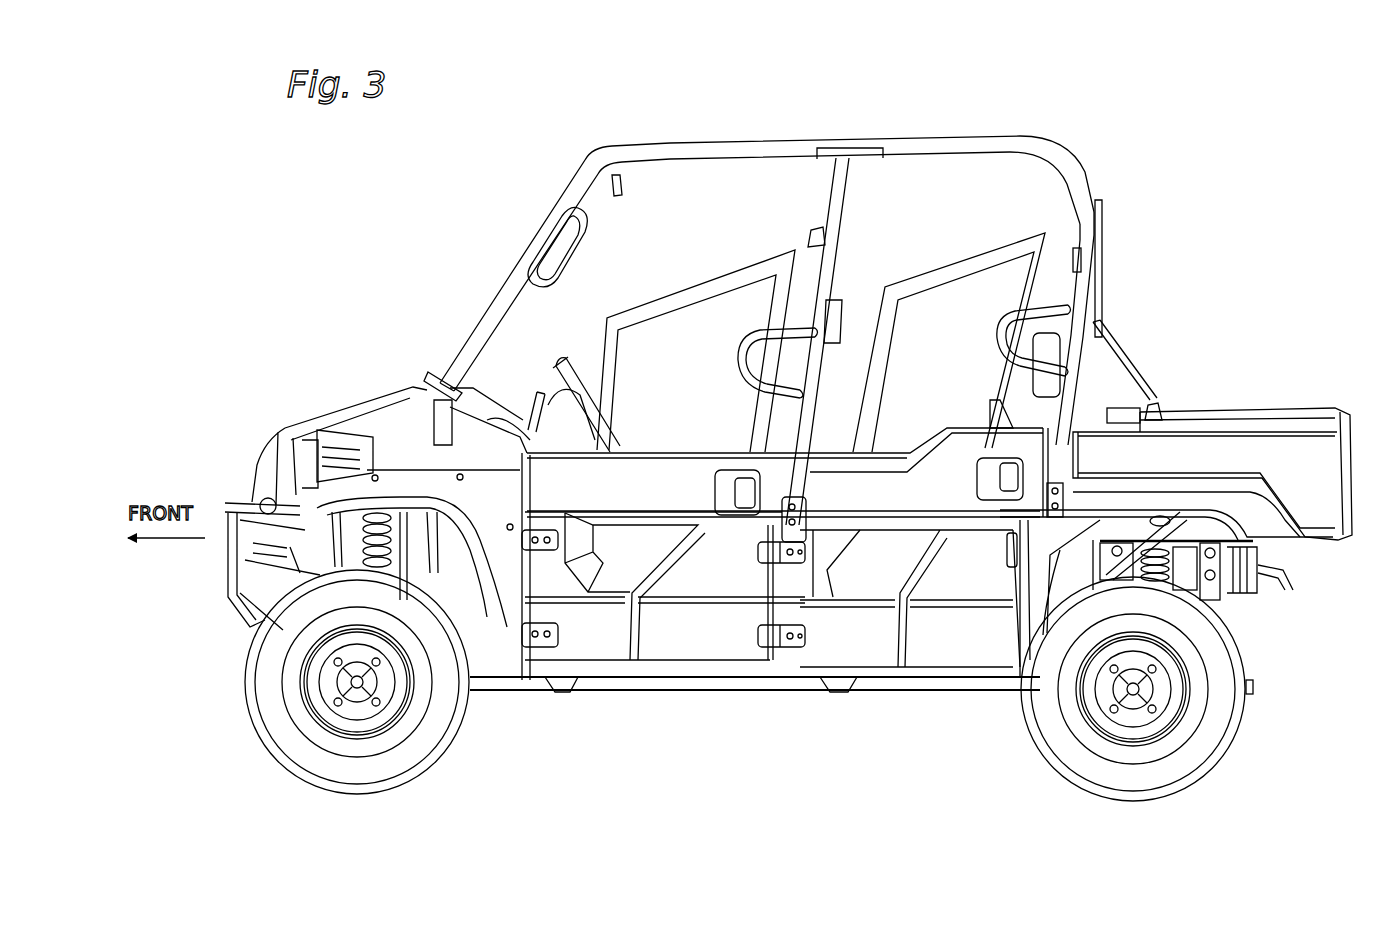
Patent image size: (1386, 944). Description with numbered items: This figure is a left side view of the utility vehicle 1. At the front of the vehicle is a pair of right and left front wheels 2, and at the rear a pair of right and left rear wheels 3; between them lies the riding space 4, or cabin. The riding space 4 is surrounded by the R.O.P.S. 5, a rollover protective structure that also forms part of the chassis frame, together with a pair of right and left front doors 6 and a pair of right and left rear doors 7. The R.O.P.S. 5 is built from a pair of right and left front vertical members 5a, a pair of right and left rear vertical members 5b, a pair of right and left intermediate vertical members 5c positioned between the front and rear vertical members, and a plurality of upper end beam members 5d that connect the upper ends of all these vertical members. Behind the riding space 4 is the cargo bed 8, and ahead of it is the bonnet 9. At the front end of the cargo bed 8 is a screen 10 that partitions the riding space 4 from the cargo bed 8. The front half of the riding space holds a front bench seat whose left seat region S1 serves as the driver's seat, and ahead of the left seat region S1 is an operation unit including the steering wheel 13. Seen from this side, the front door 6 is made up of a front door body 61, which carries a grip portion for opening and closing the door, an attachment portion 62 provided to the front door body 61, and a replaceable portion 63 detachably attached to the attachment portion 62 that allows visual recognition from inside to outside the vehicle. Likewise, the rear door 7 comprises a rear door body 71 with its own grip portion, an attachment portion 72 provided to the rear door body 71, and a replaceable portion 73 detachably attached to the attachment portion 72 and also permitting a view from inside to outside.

The utility vehicle 1 is at (1120, 145).
The front wheels 2 is at (362, 768).
The rear wheels 3 is at (1197, 750).
The riding space 4 is at (640, 272).
The R.O.P.S. 5 is at (1040, 100).
The front vertical members 5a is at (506, 285).
The rear vertical members 5b is at (1083, 278).
The intermediate vertical members 5c is at (828, 270).
The upper end beam members 5d is at (773, 150).
The front doors 6 is at (587, 700).
The rear doors 7 is at (965, 710).
The cargo bed 8 is at (1248, 448).
The bonnet 9 is at (348, 408).
The screen 10 is at (1103, 203).
The steering wheel 13 is at (558, 362).
The front door body 61 is at (680, 630).
The attachment portion 62 is at (715, 283).
The replaceable portion 63 is at (670, 333).
The rear door body 71 is at (937, 633).
The attachment portion 72 is at (925, 280).
The replaceable portion 73 is at (968, 303).
The left seat region S1 is at (605, 290).